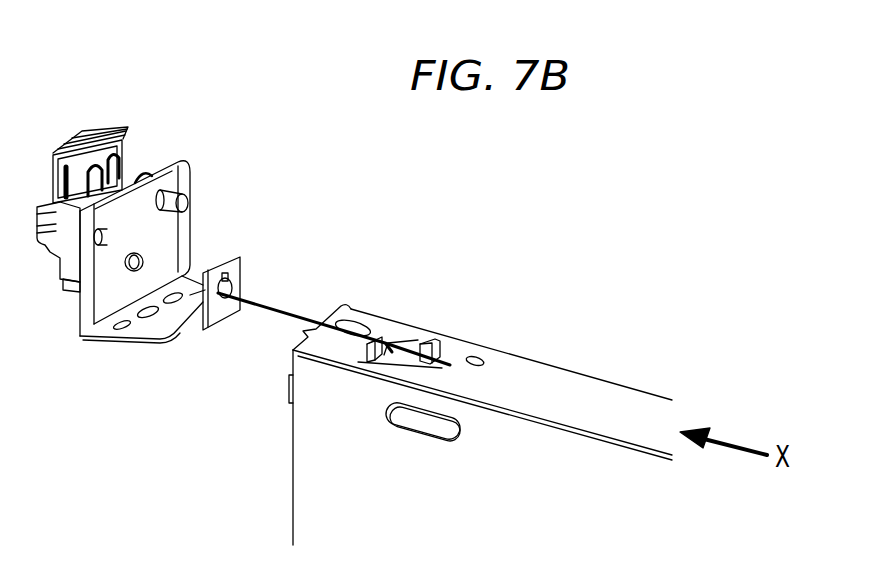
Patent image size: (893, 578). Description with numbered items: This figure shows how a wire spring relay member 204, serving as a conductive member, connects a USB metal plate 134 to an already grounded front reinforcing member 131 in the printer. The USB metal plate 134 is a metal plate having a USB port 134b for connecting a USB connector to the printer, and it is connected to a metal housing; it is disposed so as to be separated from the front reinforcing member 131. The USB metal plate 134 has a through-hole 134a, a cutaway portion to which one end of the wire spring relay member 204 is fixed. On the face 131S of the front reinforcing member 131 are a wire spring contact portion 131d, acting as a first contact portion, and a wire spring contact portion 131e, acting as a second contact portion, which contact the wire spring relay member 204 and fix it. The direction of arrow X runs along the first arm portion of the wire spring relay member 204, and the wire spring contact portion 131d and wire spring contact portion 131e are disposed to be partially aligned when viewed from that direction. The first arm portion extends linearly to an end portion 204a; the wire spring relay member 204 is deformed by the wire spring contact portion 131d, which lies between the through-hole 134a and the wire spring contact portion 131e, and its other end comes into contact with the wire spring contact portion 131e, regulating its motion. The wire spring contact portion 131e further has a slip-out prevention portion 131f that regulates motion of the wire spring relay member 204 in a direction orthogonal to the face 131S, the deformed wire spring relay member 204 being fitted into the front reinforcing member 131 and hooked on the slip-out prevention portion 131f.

The front reinforcing member 131 is at (502, 346).
The wire spring contact portion 131d is at (386, 340).
The wire spring contact portion 131e is at (437, 343).
The slip-out prevention portion 131f is at (423, 345).
The face 131S is at (537, 383).
The USB metal plate 134 is at (138, 243).
The through-hole 134a is at (200, 320).
The USB port 134b is at (84, 134).
The wire spring relay member 204 is at (334, 365).
The end portion 204a is at (390, 352).